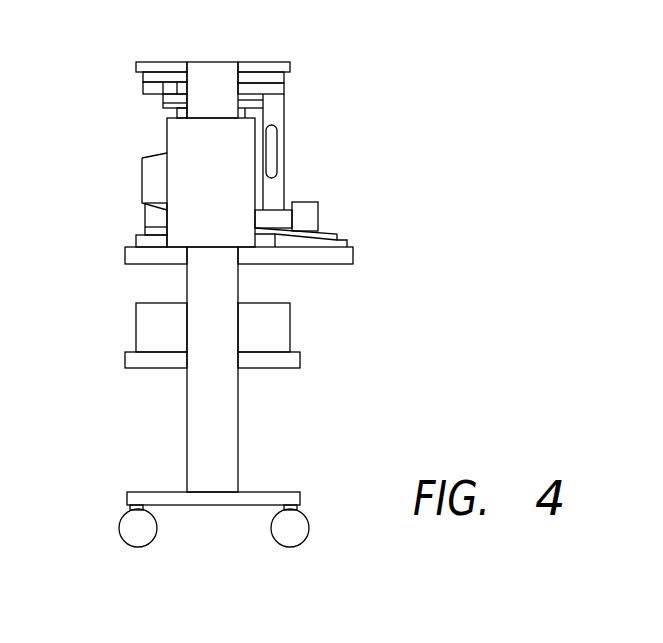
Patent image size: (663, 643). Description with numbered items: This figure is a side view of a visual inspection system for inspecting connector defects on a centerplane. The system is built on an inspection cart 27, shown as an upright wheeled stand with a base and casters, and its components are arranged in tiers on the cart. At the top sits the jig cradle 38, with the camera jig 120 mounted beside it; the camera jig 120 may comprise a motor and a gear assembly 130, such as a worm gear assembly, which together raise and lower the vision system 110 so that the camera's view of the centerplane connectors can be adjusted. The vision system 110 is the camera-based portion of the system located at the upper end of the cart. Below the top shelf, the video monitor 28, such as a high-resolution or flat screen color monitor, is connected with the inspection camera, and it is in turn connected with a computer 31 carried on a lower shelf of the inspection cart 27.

The jig cradle 38 is at (213, 77).
The vision system 110 is at (142, 87).
The camera jig 120 is at (284, 107).
The gear assembly 130 is at (289, 202).
The video monitor 28 is at (188, 210).
The computer 31 is at (135, 328).
The inspection cart 27 is at (187, 408).